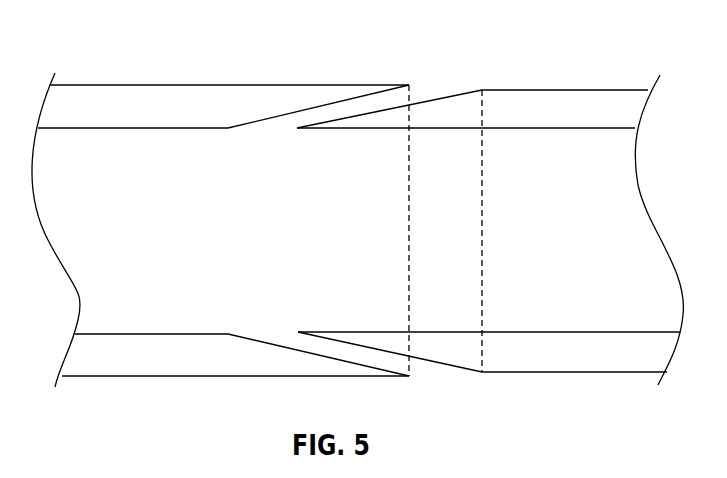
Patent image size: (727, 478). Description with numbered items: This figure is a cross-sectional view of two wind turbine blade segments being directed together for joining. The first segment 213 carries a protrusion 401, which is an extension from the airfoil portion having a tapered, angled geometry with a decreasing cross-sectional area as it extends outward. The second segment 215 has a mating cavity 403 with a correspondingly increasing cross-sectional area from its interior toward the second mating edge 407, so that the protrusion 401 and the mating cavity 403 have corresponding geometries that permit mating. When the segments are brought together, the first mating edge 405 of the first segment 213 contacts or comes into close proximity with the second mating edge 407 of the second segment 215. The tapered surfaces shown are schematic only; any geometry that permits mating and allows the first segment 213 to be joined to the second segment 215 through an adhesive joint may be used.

The first segment 213 is at (606, 90).
The second segment 215 is at (165, 85).
The protrusion 401 is at (393, 130).
The mating cavity 403 is at (292, 125).
The first mating edge 405 is at (483, 226).
The second mating edge 407 is at (411, 100).